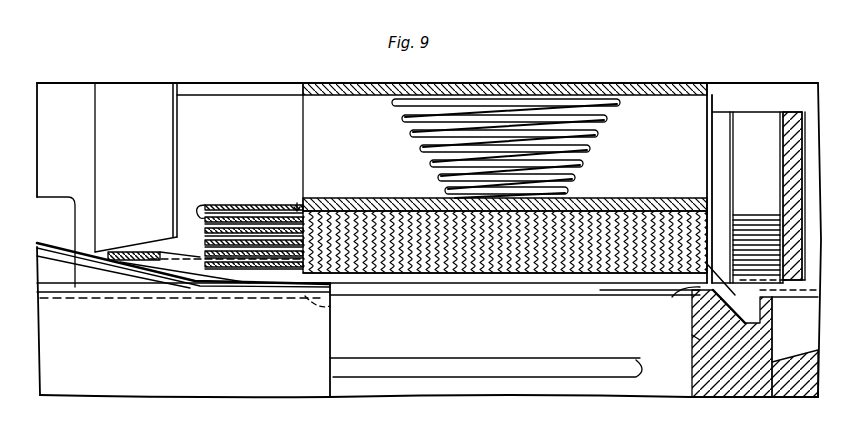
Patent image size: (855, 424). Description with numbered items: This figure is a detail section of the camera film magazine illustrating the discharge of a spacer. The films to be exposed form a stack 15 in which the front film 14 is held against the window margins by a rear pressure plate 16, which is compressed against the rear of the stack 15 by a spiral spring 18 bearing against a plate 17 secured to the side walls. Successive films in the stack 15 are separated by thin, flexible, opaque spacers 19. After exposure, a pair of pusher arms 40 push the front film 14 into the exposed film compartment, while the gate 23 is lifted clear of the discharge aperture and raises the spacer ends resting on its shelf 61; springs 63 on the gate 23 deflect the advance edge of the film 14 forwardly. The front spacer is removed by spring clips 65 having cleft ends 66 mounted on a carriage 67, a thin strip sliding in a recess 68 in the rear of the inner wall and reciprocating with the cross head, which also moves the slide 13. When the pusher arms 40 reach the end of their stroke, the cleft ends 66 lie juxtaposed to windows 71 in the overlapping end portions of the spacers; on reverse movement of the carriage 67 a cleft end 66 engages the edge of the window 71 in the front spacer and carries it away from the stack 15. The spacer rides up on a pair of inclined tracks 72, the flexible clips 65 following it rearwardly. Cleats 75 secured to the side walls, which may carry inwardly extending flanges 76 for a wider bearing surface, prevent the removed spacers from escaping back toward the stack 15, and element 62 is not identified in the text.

The slide 13 is at (571, 360).
The front film 14 is at (786, 361).
The film stack 15 is at (293, 195).
The rear pressure plate 16 is at (640, 198).
The plate 17 is at (658, 84).
The spiral spring 18 is at (612, 100).
The spacers 19 is at (203, 204).
The gate 23 is at (746, 105).
The pusher arms 40 is at (626, 296).
The shelf 61 is at (776, 292).
The lever part 62 is at (692, 338).
The springs 63 is at (717, 331).
The spring clips 65 is at (163, 246).
The cleft ends 66 is at (137, 250).
The carriage 67 is at (468, 290).
The recess 68 is at (335, 308).
The windows 71 is at (272, 206).
The inclined tracks 72 is at (106, 264).
The cleats 75 is at (102, 152).
The flanges 76 is at (178, 150).